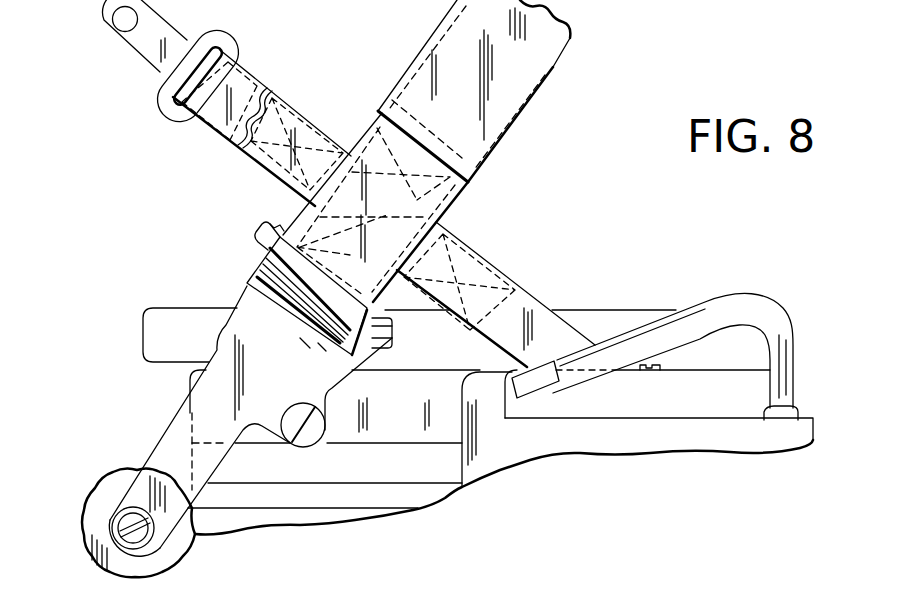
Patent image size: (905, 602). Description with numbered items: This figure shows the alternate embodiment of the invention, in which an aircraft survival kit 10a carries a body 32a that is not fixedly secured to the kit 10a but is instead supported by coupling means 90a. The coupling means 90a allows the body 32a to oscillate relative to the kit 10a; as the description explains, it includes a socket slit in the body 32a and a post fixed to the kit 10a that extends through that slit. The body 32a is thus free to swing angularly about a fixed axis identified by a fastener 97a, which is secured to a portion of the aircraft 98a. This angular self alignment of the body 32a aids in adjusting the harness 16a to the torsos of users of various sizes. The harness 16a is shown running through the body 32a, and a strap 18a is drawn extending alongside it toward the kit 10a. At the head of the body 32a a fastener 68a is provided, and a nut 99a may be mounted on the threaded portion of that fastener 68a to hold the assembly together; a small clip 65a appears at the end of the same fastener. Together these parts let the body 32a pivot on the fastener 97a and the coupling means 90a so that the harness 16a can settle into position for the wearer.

The kit 10a is at (311, 538).
The harness 16a is at (572, 36).
The lap belt with buckle tongue 18a is at (493, 264).
The body 32a is at (212, 347).
The clip tab 65a is at (272, 233).
The fastener 68a is at (256, 255).
The coupling means 90a is at (293, 446).
The fastener 97a is at (152, 537).
The portion of the aircraft 98a is at (87, 507).
The nut 99a is at (393, 333).